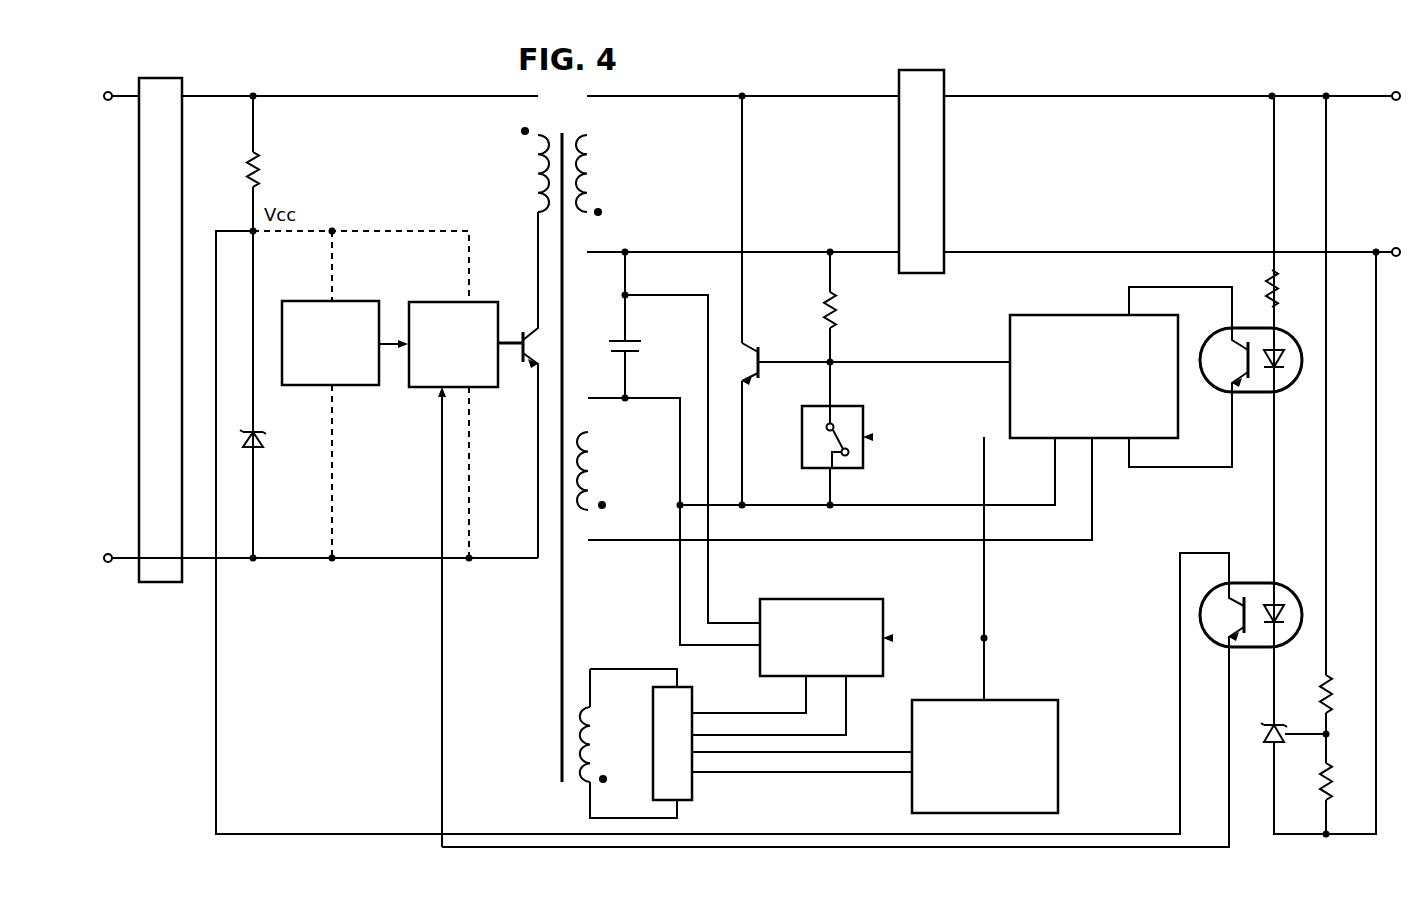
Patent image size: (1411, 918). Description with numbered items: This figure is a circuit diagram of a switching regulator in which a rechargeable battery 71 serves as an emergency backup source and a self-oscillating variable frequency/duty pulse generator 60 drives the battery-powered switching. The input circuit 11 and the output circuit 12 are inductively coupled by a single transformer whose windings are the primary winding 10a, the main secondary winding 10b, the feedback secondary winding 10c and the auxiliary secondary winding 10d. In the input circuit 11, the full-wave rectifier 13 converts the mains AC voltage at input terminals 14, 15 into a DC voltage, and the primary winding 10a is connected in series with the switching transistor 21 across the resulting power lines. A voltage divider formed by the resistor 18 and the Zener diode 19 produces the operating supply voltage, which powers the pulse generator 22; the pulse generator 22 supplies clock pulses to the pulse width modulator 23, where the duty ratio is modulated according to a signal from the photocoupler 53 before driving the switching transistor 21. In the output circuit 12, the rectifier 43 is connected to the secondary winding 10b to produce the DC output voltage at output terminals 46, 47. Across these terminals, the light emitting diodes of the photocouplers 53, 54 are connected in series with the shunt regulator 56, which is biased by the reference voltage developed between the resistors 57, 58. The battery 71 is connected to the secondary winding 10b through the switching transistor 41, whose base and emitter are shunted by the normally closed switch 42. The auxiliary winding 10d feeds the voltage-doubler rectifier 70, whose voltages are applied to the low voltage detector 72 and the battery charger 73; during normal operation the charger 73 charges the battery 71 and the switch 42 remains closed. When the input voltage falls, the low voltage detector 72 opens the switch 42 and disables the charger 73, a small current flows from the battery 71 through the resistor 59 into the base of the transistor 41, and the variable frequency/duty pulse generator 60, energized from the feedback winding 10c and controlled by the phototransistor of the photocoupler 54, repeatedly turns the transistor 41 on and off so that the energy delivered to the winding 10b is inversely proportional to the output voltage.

The primary winding 10a is at (538, 173).
The secondary winding 10b is at (585, 173).
The auxiliary (feedback) secondary winding 10c is at (592, 469).
The auxiliary secondary winding 10d is at (595, 741).
The input circuit 11 is at (376, 77).
The output circuit 12 is at (822, 77).
The full-wave rectifier 13 is at (158, 78).
The input terminal 14 is at (108, 92).
The input terminal 15 is at (108, 554).
The resistor 18 is at (259, 171).
The Zener diode 19 is at (262, 442).
The switching transistor 21 is at (528, 364).
The pulse generator 22 is at (355, 301).
The pulse width modulator 23 is at (434, 302).
The switching transistor 41 is at (758, 352).
The normally closed switch 42 is at (863, 412).
The rectifier 43 is at (916, 77).
The output terminal 46 is at (1394, 89).
The output terminal 47 is at (1394, 247).
The photocoupler 53 is at (1248, 582).
The photocoupler 54 is at (1290, 388).
The shunt regulator 56 is at (1268, 741).
The resistor 57 is at (1332, 693).
The resistor 58 is at (1332, 784).
The resistor 59 is at (836, 314).
The variable frequency/duty pulse generator 60 is at (1058, 314).
The rectifier 70 is at (692, 695).
The rechargeable battery 71 is at (634, 340).
The low voltage detector 72 is at (1058, 716).
The battery charger 73 is at (816, 598).